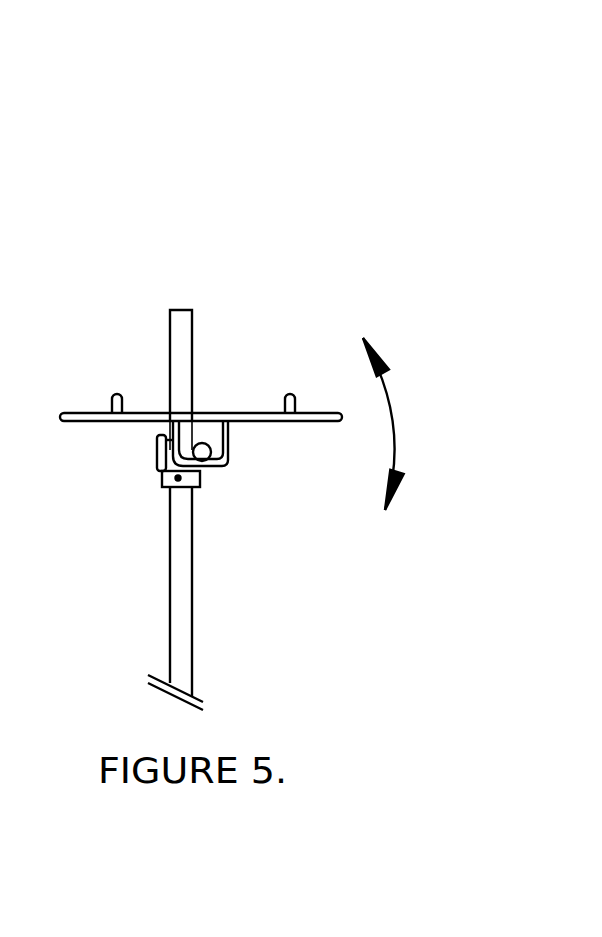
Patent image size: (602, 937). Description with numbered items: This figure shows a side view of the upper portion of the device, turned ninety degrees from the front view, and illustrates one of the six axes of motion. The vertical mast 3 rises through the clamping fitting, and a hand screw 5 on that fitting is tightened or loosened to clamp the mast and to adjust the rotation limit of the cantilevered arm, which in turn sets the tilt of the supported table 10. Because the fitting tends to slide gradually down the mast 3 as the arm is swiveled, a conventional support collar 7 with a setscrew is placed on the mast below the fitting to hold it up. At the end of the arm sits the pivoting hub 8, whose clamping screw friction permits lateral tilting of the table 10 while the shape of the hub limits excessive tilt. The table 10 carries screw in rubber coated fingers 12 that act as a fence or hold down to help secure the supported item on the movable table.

The mast 3 is at (126, 393).
The screw in rubber coated fingers 12 is at (268, 219).
The table 10 is at (255, 410).
The pivoting hub 8 is at (227, 440).
The hand screw 5 is at (223, 467).
The support collar 7 is at (195, 485).